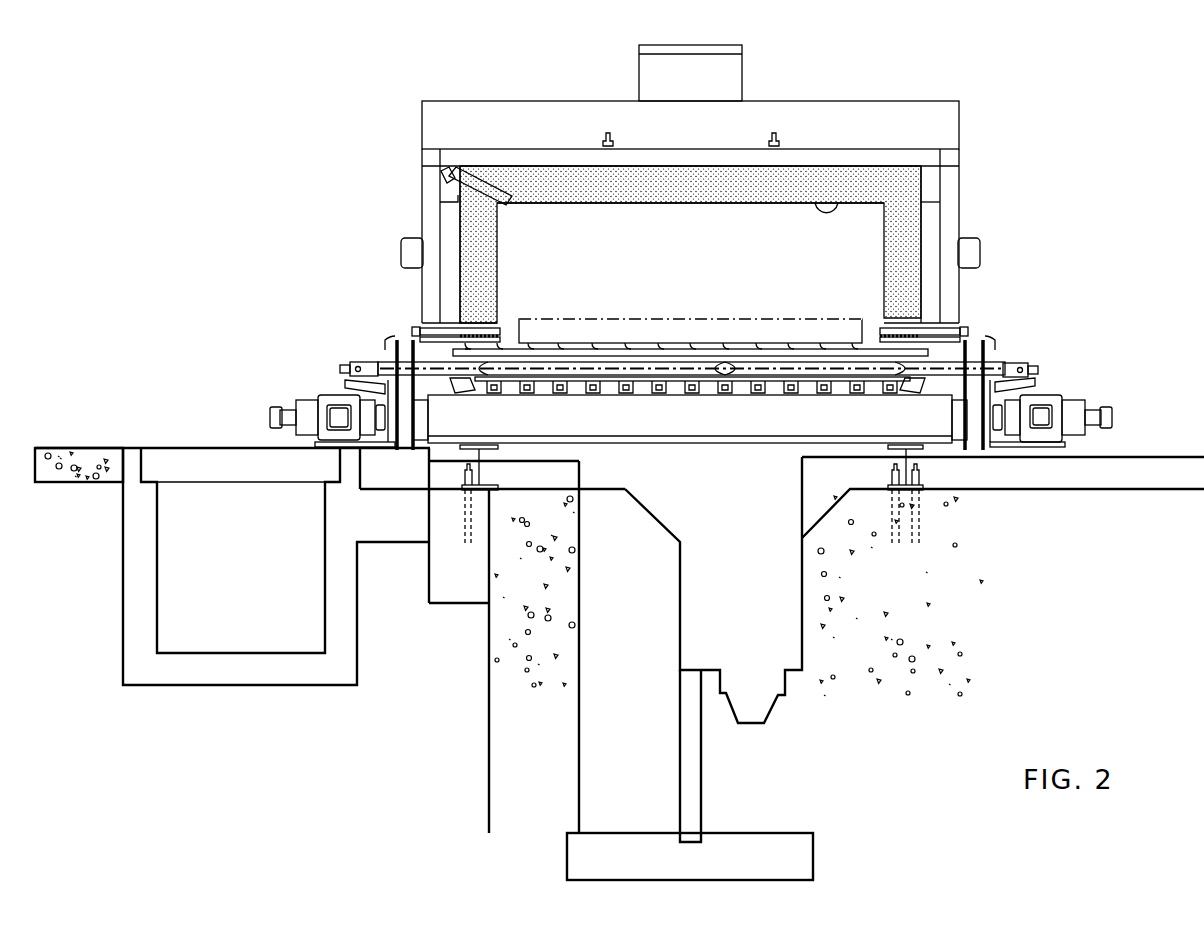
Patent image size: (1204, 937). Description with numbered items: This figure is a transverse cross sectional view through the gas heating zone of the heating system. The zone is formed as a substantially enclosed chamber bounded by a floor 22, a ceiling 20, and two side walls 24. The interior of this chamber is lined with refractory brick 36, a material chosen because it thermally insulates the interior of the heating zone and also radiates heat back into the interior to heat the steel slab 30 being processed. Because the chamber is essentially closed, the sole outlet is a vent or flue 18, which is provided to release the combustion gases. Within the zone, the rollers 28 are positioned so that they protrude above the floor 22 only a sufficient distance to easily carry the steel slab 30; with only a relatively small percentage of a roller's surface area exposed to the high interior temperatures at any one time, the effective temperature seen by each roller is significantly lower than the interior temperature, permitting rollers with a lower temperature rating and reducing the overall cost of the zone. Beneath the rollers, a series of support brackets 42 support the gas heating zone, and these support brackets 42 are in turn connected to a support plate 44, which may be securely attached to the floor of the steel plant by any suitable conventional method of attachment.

The vent or flue 18 is at (735, 45).
The ceiling 20 is at (830, 200).
The floor 22 is at (932, 443).
The side walls 24 is at (470, 232).
The rollers 28 is at (970, 345).
The steel slab 30 is at (407, 252).
The refractory brick 36 is at (522, 200).
The support brackets 42 is at (318, 400).
The support plate 44 is at (370, 362).